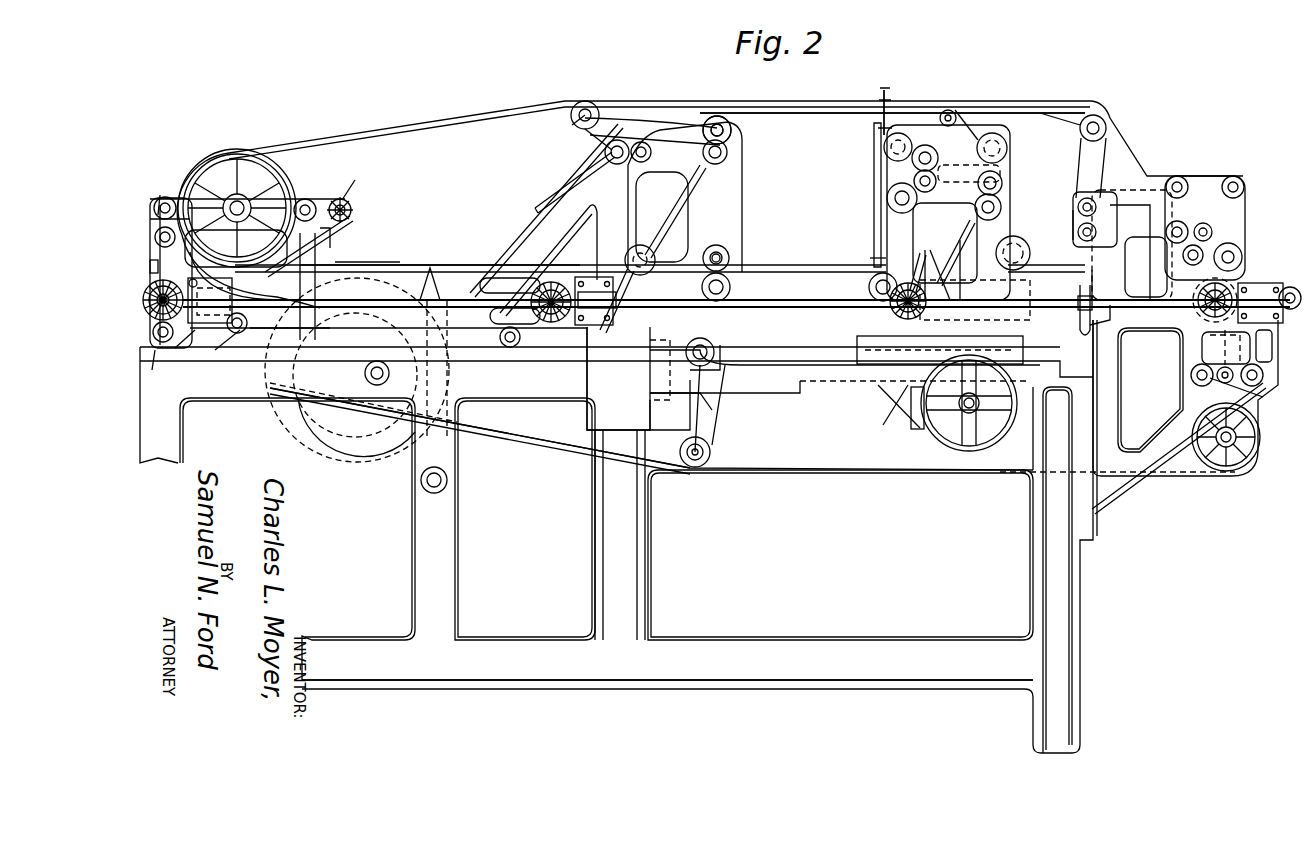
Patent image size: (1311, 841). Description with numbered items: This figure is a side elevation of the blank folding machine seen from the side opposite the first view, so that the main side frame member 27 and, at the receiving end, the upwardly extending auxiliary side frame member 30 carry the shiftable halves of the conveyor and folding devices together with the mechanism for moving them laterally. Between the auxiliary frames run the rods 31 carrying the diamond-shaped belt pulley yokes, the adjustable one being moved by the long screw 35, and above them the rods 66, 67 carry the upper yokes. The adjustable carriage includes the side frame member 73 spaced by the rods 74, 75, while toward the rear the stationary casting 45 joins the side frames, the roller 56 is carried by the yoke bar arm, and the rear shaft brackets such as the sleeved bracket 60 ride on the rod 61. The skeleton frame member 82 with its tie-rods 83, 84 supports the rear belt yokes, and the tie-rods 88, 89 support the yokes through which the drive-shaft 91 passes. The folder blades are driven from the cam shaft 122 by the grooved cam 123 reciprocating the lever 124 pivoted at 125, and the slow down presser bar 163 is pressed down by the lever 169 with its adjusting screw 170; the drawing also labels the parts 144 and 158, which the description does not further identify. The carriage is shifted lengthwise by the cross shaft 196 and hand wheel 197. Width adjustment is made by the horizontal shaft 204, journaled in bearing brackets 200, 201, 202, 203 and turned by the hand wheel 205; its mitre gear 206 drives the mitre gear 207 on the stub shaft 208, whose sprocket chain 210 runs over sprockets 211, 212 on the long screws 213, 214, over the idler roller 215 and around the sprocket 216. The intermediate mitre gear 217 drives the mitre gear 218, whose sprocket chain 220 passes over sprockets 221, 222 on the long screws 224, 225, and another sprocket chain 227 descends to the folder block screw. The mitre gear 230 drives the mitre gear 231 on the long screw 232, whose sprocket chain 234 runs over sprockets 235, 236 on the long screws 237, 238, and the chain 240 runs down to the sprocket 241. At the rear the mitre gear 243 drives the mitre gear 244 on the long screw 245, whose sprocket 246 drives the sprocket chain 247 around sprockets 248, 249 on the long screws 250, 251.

The side frame member 27 is at (645, 540).
The auxiliary side frame member 30 is at (1110, 390).
The parallel rods 31 is at (1276, 370).
The long screw 35 is at (1220, 380).
The stationary casting 45 is at (600, 376).
The roller 56 is at (642, 258).
The sleeved bracket 60 is at (310, 328).
The parallel rod 61 is at (157, 370).
The parallel rod 66 is at (1172, 222).
The parallel rod 67 is at (1078, 232).
The carriage side frame member 73 is at (960, 208).
The parallel rod 74 is at (1000, 202).
The parallel rod 75 is at (977, 150).
The skeleton frame member 82 is at (560, 190).
The tie-rod 83 is at (727, 152).
The tie-rod 84 is at (590, 180).
The tie-rod 88 is at (305, 199).
The tie-rod 89 is at (165, 197).
The drive-shaft 91 is at (237, 194).
The cam shaft 122 is at (370, 387).
The grooved cam 123 is at (382, 442).
The lever 124 is at (430, 268).
The pivot 125 is at (447, 483).
The pulley 144 is at (1248, 172).
The roller 158 is at (382, 384).
The presser bar 163 is at (874, 155).
The lever 169 is at (945, 110).
The adjusting screw 170 is at (886, 90).
The cross shaft 196 is at (975, 410).
The hand wheel 197 is at (950, 434).
The bearing bracket 200 is at (1285, 290).
The bearing bracket 201 is at (960, 310).
The bearing bracket 202 is at (612, 320).
The bearing bracket 203 is at (188, 352).
The horizontal shaft 204 is at (835, 322).
The hand wheel 205 is at (1078, 325).
The mitre gear 206 is at (1228, 290).
The mitre gear 207 is at (1202, 338).
The stub shaft 208 is at (1198, 308).
The sprocket chain 210 is at (1188, 190).
The sprocket 211 is at (1203, 223).
The sprocket 212 is at (1078, 205).
The long screw 213 is at (1203, 250).
The long screw 214 is at (1073, 217).
The idler roller 215 is at (1112, 318).
The sprocket 216 is at (1250, 392).
The intermediate mitre gear 217 is at (938, 260).
The mitre gear 218 is at (932, 255).
The sprocket chain 220 is at (965, 238).
The sprocket 221 is at (1000, 178).
The sprocket 222 is at (925, 171).
The long screw 224 is at (1002, 181).
The long screw 225 is at (887, 196).
The sprocket chain 227 is at (884, 405).
The mitre gear 230 is at (520, 337).
The mitre gear 231 is at (533, 303).
The long screw 232 is at (510, 285).
The sprocket chain 234 is at (540, 245).
The sprocket 235 is at (648, 145).
The sprocket 236 is at (731, 127).
The long screw 237 is at (648, 145).
The long screw 238 is at (730, 100).
The chain 240 is at (720, 255).
The sprocket 241 is at (660, 380).
The mitre gear 243 is at (190, 279).
The mitre gear 244 is at (150, 331).
The long screw 245 is at (143, 264).
The sprocket 246 is at (155, 296).
The sprocket chain 247 is at (333, 233).
The sprocket 248 is at (156, 233).
The sprocket 249 is at (351, 206).
The long screw 250 is at (166, 195).
The long screw 251 is at (359, 180).